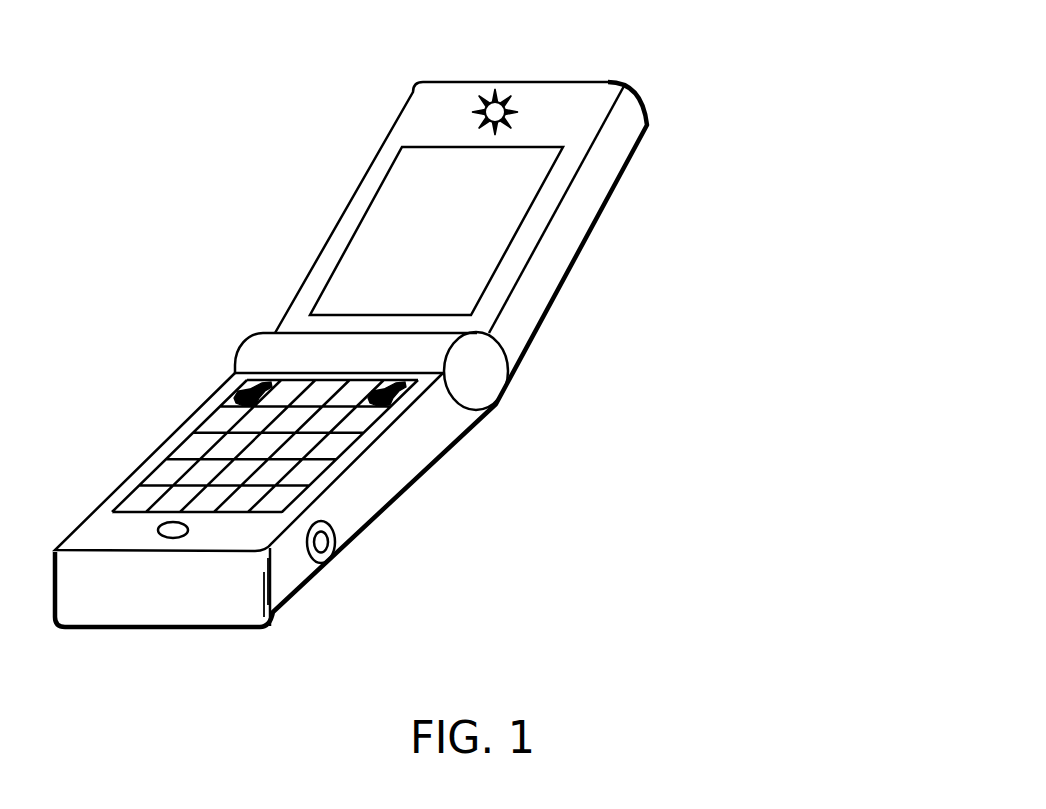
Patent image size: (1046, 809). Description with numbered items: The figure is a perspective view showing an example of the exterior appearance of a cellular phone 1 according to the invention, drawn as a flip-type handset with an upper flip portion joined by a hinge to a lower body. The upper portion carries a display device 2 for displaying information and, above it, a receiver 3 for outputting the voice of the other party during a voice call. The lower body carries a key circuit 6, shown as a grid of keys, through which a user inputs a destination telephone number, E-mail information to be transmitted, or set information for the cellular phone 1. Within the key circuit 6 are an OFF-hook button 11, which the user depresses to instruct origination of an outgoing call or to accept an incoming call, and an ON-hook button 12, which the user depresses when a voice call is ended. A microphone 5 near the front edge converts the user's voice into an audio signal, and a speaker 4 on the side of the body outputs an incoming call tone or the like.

The cellular phone 1 is at (643, 111).
The display device 2 is at (522, 228).
The receiver 3 is at (497, 90).
The speaker 4 is at (327, 556).
The microphone 5 is at (172, 538).
The key circuit 6 is at (318, 482).
The OFF-hook button 11 is at (247, 385).
The ON-hook button 12 is at (400, 404).